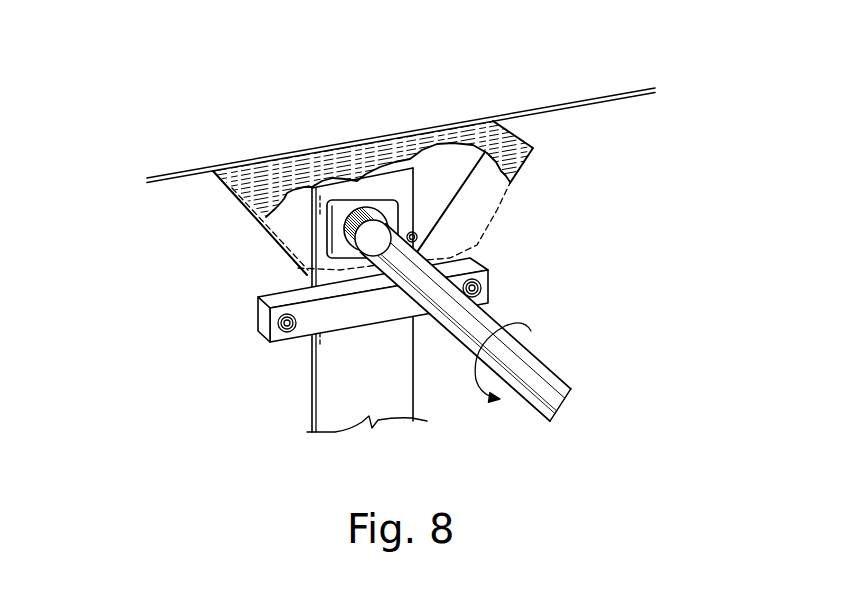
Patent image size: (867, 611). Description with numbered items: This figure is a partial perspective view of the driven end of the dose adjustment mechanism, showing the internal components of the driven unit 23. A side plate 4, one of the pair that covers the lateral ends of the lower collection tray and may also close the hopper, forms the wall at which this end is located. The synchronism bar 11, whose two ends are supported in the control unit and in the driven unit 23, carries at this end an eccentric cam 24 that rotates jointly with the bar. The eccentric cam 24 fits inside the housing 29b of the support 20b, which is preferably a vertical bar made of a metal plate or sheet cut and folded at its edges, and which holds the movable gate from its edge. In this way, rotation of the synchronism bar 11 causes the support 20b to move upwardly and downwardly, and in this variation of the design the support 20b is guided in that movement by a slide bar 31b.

The side plate 4 is at (571, 155).
The driven unit 23 is at (258, 135).
The housing 29b is at (325, 242).
The support 20b is at (398, 345).
The eccentric cam 24 is at (379, 212).
The slide bar 31b is at (331, 316).
The synchronism bar 11 is at (548, 352).